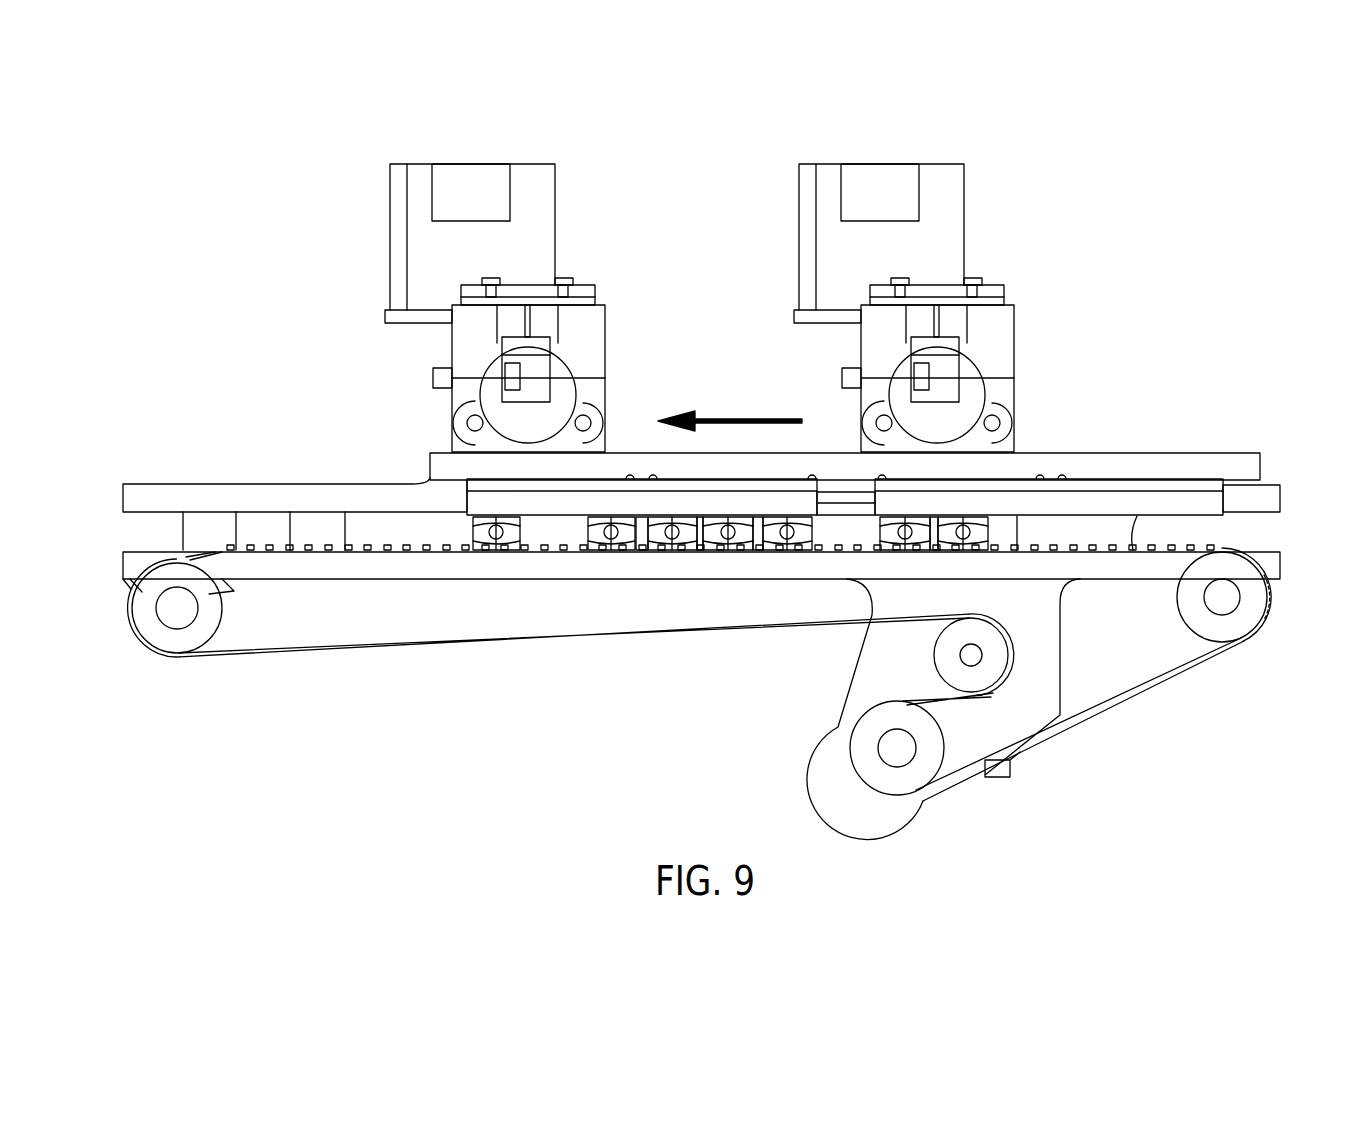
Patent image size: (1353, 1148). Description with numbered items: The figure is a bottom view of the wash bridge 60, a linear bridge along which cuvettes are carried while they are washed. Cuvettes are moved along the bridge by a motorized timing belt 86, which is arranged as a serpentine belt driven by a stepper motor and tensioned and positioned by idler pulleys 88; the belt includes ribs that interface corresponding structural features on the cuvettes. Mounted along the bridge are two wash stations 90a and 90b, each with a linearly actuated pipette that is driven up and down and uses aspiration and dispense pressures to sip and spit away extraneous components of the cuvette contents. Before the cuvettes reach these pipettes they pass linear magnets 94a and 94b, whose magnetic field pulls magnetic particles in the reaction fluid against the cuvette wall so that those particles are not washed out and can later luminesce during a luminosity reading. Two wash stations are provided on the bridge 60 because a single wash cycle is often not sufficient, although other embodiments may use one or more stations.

The wash bridge 60 is at (1151, 152).
The timing belt 86 is at (403, 552).
The idler pulley 88 is at (163, 643).
The wash station 90a is at (952, 190).
The wash station 90b is at (543, 190).
The linear magnet 94a is at (1122, 490).
The linear magnet 94b is at (482, 488).